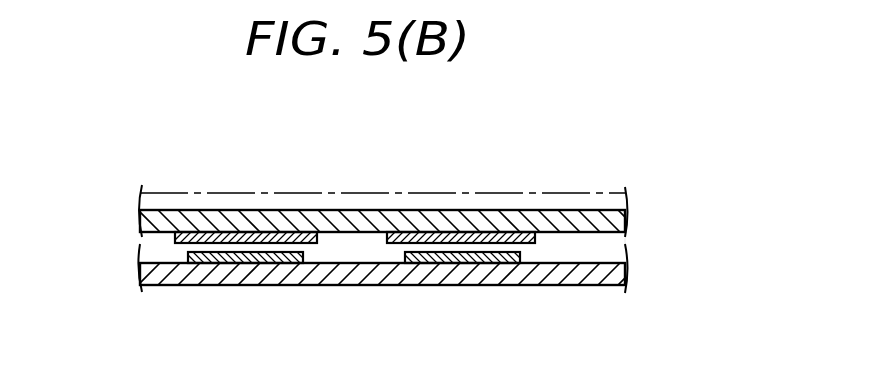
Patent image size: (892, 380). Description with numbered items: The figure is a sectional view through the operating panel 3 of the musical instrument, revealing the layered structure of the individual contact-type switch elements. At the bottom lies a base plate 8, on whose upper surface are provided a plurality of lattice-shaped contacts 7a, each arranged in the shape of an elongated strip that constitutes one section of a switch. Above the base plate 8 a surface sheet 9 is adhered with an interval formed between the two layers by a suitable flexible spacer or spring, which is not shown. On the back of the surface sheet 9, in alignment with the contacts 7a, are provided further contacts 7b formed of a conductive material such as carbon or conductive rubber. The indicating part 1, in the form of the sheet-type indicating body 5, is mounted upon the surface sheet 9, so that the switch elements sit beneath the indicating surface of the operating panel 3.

The sheet-type indicating body 5 is at (194, 203).
The indicating part 1 is at (300, 200).
The surface sheet 9 is at (628, 222).
The base plate 8 is at (566, 286).
The contacts 7b is at (300, 238).
The lattice-shaped contacts 7a is at (259, 257).
The operating panel 3 is at (626, 247).